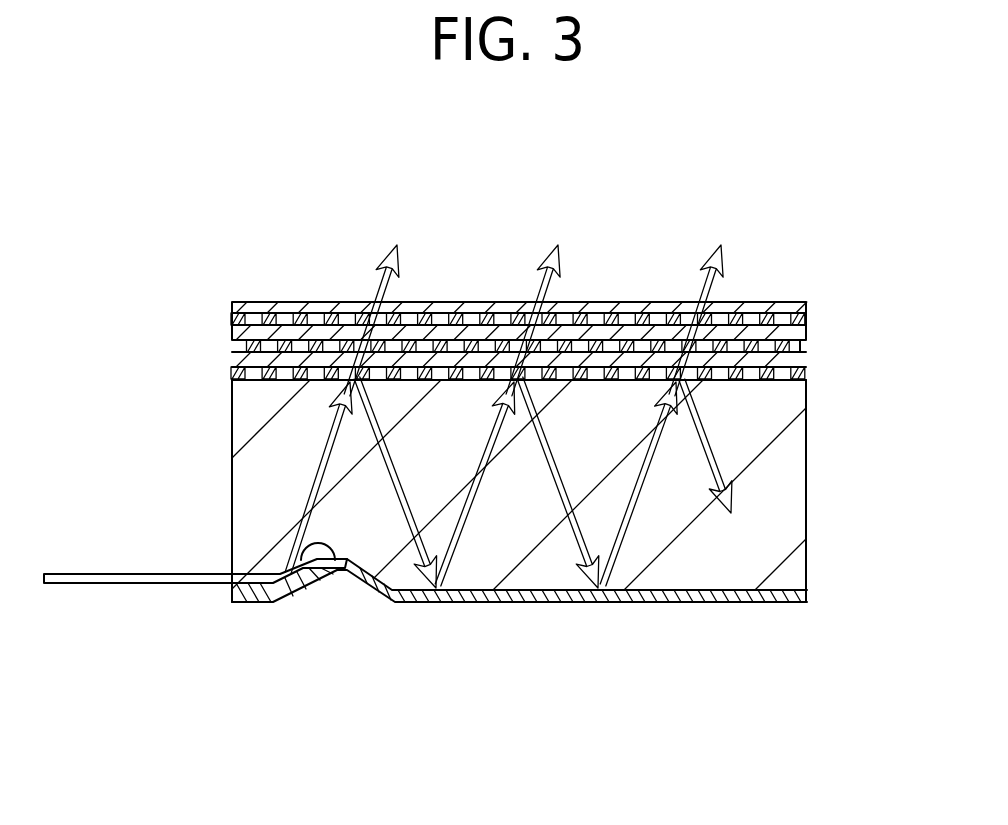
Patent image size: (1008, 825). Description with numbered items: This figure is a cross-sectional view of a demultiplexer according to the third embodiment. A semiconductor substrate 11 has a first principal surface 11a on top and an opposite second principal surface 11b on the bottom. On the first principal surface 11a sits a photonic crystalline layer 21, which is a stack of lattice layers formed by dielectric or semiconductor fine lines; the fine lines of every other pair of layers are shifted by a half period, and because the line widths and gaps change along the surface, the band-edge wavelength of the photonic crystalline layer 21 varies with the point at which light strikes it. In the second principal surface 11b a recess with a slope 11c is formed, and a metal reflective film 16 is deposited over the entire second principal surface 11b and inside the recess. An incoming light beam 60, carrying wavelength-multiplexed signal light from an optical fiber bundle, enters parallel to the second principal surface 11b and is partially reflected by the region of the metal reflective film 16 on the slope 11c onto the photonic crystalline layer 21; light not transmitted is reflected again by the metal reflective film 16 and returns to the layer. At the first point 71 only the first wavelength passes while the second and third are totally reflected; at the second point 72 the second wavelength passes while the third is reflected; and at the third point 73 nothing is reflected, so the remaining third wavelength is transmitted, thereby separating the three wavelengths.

The semiconductor substrate 11 is at (807, 512).
The first principal surface 11a is at (781, 367).
The second principal surface 11b is at (733, 602).
The slope 11c is at (335, 572).
The metal reflective film 16 is at (485, 602).
The photonic crystalline layer 21 is at (812, 293).
The incoming light beam 60 is at (137, 573).
The first point 71 is at (345, 340).
The second point 72 is at (512, 352).
The third point 73 is at (677, 352).